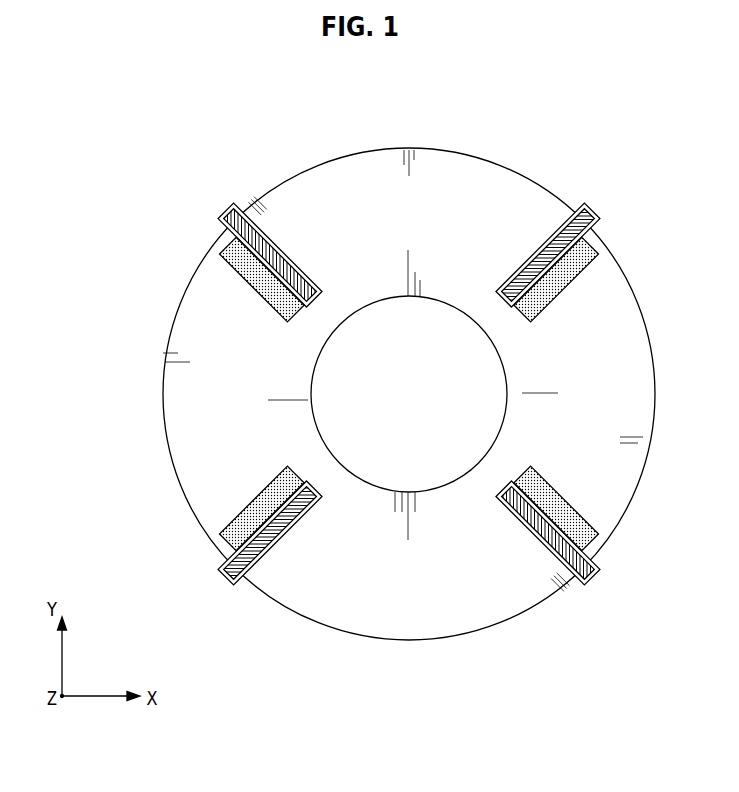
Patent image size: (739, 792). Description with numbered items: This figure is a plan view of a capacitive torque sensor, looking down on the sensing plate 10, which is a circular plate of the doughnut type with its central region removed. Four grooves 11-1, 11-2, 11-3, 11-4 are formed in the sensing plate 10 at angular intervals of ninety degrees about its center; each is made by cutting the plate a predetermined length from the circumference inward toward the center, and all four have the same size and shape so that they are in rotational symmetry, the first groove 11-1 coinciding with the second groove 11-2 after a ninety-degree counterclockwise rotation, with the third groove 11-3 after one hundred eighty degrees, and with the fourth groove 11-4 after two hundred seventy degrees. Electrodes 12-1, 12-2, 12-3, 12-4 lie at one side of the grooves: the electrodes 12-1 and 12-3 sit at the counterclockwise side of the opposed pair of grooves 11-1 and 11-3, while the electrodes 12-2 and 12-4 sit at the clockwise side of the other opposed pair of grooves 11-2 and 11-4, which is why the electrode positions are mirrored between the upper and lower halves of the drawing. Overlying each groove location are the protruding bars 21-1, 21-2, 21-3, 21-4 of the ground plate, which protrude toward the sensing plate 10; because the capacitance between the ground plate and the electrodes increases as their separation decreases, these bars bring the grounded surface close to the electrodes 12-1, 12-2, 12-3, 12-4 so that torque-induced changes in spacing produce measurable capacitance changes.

The sensing plate 10 is at (447, 168).
The first groove 11-1 is at (236, 164).
The second groove 11-2 is at (228, 627).
The third groove 11-3 is at (582, 625).
The fourth groove 11-4 is at (589, 162).
The protruding bar 21-1 is at (240, 229).
The protruding bar 21-2 is at (240, 560).
The protruding bar 21-3 is at (577, 560).
The protruding bar 21-4 is at (577, 228).
The electrode 12-1 is at (270, 288).
The electrode 12-2 is at (277, 483).
The electrode 12-3 is at (541, 483).
The electrode 12-4 is at (548, 288).